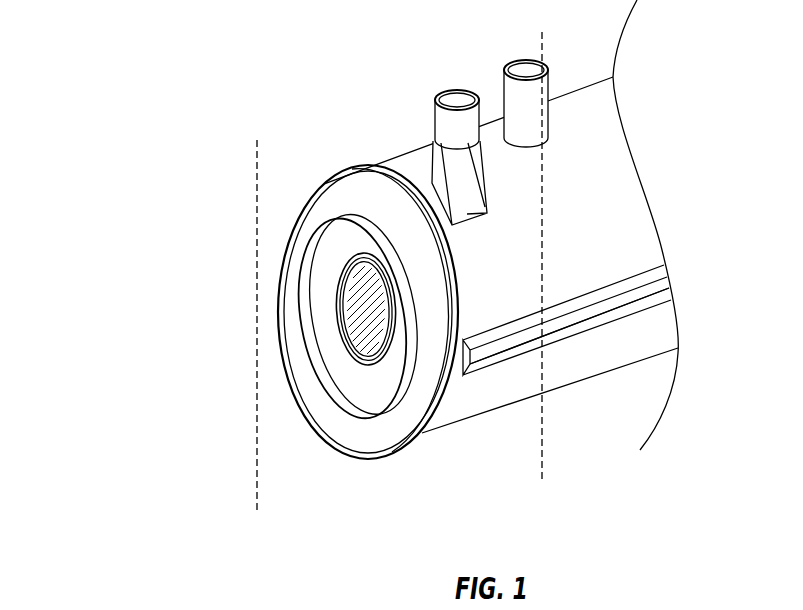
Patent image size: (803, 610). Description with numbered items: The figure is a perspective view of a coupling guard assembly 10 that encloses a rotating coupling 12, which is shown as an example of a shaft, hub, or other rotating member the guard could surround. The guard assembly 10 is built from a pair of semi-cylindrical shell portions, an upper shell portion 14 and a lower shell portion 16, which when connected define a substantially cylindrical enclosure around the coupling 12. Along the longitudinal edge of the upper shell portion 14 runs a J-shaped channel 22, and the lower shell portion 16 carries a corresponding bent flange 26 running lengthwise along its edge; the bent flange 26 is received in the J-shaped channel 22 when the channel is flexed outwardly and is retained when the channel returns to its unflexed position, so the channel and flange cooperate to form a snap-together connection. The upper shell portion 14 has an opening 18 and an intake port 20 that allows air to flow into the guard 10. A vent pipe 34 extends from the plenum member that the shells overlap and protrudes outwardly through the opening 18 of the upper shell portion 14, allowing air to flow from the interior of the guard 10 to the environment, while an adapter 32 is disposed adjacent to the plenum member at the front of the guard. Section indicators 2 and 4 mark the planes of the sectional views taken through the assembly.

The coupling guard assembly 10 is at (374, 229).
The rotating coupling 12 is at (357, 325).
The upper shell portion 14 is at (553, 227).
The lower shell portion 16 is at (556, 377).
The opening 18 is at (486, 194).
The intake port 20 is at (515, 92).
The J-shaped channel 22 is at (632, 283).
The bent flange 26 is at (610, 330).
The adapter 32 is at (367, 183).
The vent pipe 34 is at (440, 117).
The section line 2- 2 is at (522, 467).
The section line 4- 4 is at (275, 507).